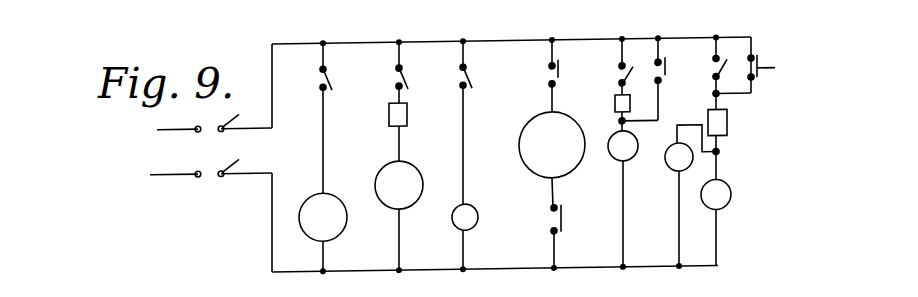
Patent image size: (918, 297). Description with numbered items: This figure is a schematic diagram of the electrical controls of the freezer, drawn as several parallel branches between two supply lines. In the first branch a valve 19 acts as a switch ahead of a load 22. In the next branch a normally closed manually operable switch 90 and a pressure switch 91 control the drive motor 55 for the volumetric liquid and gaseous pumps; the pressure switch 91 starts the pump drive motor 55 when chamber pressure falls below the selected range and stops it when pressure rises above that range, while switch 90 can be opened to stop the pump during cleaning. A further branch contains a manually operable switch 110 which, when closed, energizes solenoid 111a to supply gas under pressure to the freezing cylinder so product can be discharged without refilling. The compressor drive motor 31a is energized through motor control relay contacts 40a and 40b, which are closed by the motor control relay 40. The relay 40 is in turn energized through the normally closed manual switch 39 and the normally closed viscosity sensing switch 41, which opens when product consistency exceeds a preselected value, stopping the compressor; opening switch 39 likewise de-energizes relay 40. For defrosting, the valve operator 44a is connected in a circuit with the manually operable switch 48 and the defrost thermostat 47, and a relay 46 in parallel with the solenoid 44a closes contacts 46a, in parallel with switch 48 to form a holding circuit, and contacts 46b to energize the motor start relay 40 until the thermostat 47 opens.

The valve 19 is at (331, 82).
The motor 22 is at (337, 231).
The manually operable switch 90 is at (407, 82).
The pressure switch 91 is at (407, 121).
The drive motor 55 is at (408, 207).
The manually operable switch 110 is at (471, 82).
The solenoid 111a is at (471, 225).
The motor control relay contacts 40a is at (559, 74).
The compressor drive motor 31a is at (540, 164).
The motor control relay contacts 40b is at (562, 228).
The manually operable switch 39 is at (633, 72).
The viscosity sensing switch 41 is at (615, 112).
The motor control relay 40 is at (630, 164).
The relay contacts 46b is at (665, 72).
The relay contacts 46a is at (727, 66).
The manually operable switch 48 is at (757, 65).
The defrost thermostat 47 is at (727, 137).
The relay 46 is at (676, 166).
The electroresponsive operator 44a is at (729, 207).